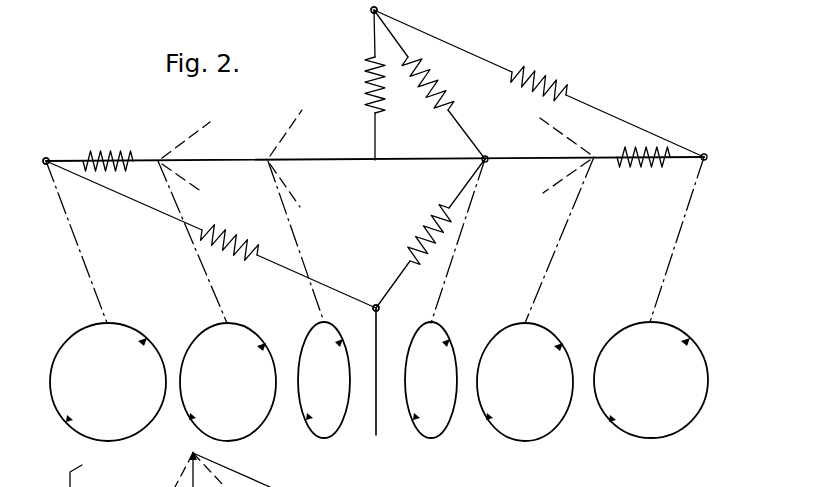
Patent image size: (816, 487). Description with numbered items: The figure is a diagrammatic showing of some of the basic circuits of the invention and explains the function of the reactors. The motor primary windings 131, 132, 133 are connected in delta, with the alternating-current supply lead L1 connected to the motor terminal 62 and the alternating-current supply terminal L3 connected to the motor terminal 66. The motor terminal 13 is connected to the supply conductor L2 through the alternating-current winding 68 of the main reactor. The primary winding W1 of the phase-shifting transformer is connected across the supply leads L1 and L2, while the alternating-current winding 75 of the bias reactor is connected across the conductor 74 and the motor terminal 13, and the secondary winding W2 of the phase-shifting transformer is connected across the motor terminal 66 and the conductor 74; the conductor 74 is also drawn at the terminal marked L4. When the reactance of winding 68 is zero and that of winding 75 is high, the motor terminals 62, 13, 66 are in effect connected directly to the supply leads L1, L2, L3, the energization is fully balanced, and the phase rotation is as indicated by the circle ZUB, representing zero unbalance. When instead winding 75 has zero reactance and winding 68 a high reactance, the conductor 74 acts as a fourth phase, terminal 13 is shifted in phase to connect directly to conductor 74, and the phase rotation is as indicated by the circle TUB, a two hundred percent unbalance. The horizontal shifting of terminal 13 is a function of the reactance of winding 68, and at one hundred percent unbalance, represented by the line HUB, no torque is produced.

The motor terminal 62 is at (371, 11).
The alternating-current supply lead L1 is at (380, 11).
The motor primary winding 131 is at (366, 78).
The motor primary winding 132 is at (438, 85).
The primary winding of the phase-shifting transformer W1 is at (536, 71).
The conductor 74 is at (46, 158).
The line conductor L4 is at (44, 164).
The alternating-current winding of the bias reactor 75 is at (95, 154).
The motor terminal 13 is at (492, 148).
The supply conductor L2 is at (707, 157).
The alternating-current winding of the main reactor 68 is at (654, 164).
The secondary winding of the phase-shifting transformer W2 is at (224, 230).
The motor primary winding 133 is at (428, 236).
The alternating-current supply terminal L3 is at (372, 310).
The motor terminal 66 is at (380, 308).
The circle TUB is at (82, 334).
The circle ZUB is at (677, 326).
The line HUB is at (378, 432).